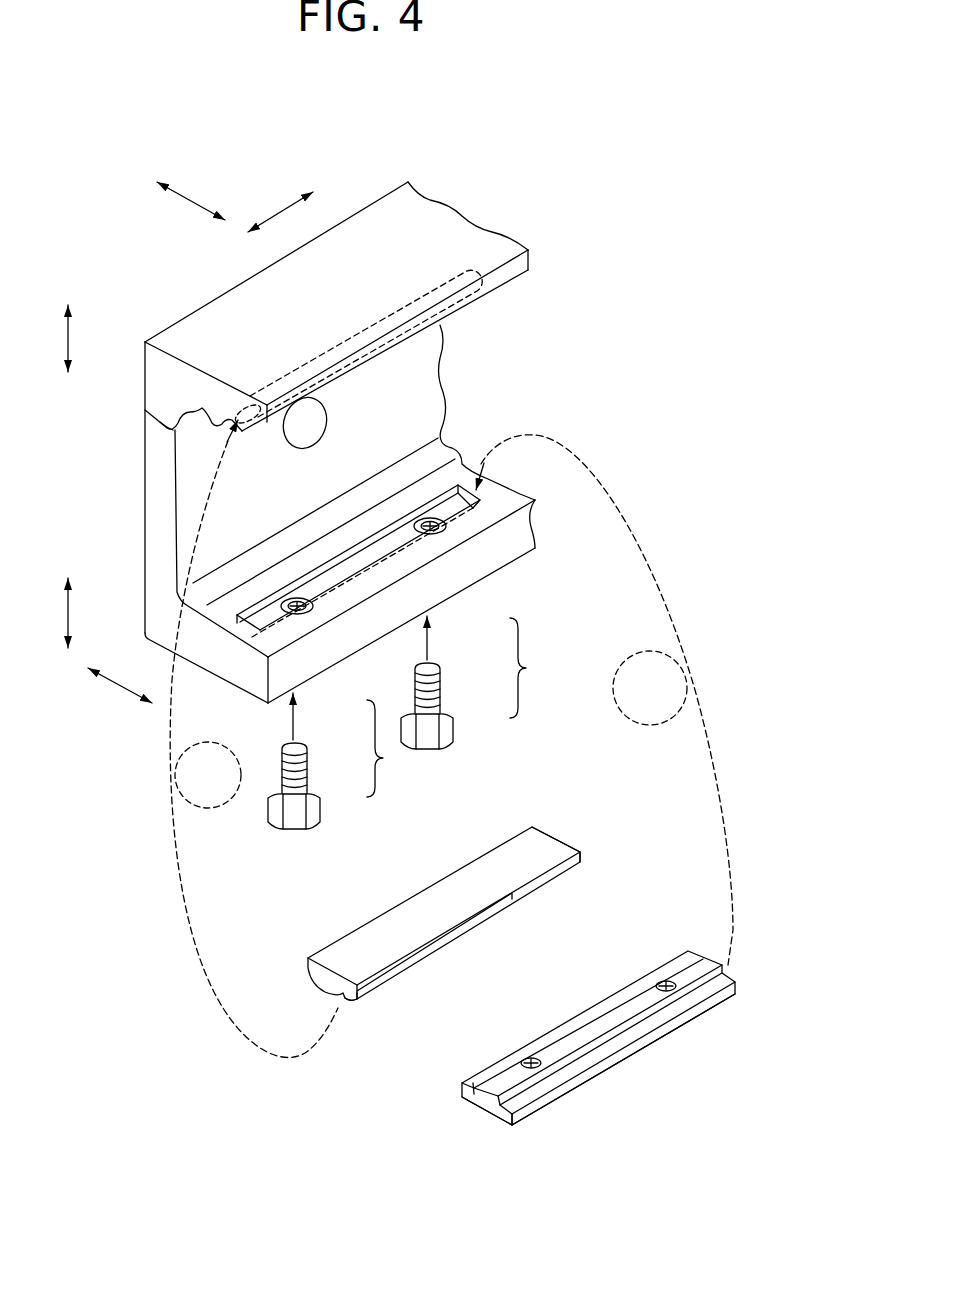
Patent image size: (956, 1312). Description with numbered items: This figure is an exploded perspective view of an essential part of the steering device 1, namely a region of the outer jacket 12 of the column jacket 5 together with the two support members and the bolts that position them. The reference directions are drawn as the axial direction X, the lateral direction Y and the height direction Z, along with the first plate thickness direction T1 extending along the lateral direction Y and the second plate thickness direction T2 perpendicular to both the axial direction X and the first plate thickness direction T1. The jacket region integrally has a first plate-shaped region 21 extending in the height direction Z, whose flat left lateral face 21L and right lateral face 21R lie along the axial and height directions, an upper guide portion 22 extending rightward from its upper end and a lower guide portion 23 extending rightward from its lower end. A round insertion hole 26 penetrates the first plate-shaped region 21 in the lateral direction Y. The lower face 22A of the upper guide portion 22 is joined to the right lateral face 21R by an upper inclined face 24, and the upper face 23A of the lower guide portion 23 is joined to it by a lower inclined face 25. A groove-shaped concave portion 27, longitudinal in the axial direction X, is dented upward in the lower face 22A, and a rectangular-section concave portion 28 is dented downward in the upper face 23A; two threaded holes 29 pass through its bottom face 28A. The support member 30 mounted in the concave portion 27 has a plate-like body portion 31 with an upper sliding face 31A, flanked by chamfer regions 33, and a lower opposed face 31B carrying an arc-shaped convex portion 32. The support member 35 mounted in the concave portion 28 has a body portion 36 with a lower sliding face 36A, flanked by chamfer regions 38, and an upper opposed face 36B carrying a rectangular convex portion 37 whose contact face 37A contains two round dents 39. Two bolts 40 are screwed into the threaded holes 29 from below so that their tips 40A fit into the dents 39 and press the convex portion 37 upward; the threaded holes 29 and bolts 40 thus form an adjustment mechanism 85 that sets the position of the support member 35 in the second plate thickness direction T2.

The steering device 1 is at (604, 204).
The column jacket 5 is at (298, 440).
The outer jacket 12 is at (462, 241).
The first plate-shaped region 21 is at (298, 514).
The left lateral face 21L is at (143, 439).
The right lateral face 21R is at (194, 485).
The upper guide portion 22 is at (336, 293).
The lower face 22A is at (202, 408).
The lower guide portion 23 is at (364, 581).
The upper face 23A is at (275, 580).
The upper inclined face 24 is at (160, 422).
The lower inclined face 25 is at (413, 465).
The insertion hole 26 is at (314, 428).
The concave portion 27 is at (462, 298).
The concave portion 28 is at (358, 541).
The bottom face 28A is at (378, 554).
The threaded holes 29 is at (310, 610).
The support member 30 is at (425, 938).
The body portion 31 is at (427, 938).
The sliding face 31A is at (500, 867).
The opposed face 31B is at (352, 1002).
The convex portion 32 is at (320, 991).
The chamfer regions 33 is at (418, 890).
The support member 35 is at (587, 1079).
The body portion 36 is at (587, 1082).
The sliding face 36A is at (485, 1115).
The opposed face 36B is at (473, 1083).
The convex portion 37 is at (592, 1075).
The contact face 37A is at (613, 1015).
The chamfer regions 38 is at (680, 1025).
The dents 39 is at (528, 1058).
The bolts 40 is at (359, 722).
The tips 40A is at (292, 744).
The adjustment mechanism 85 is at (459, 707).
The axial direction X is at (278, 212).
The lateral direction Y is at (198, 204).
The height direction Z is at (62, 339).
The first plate thickness direction T1 is at (118, 697).
The second plate thickness direction T2 is at (62, 612).